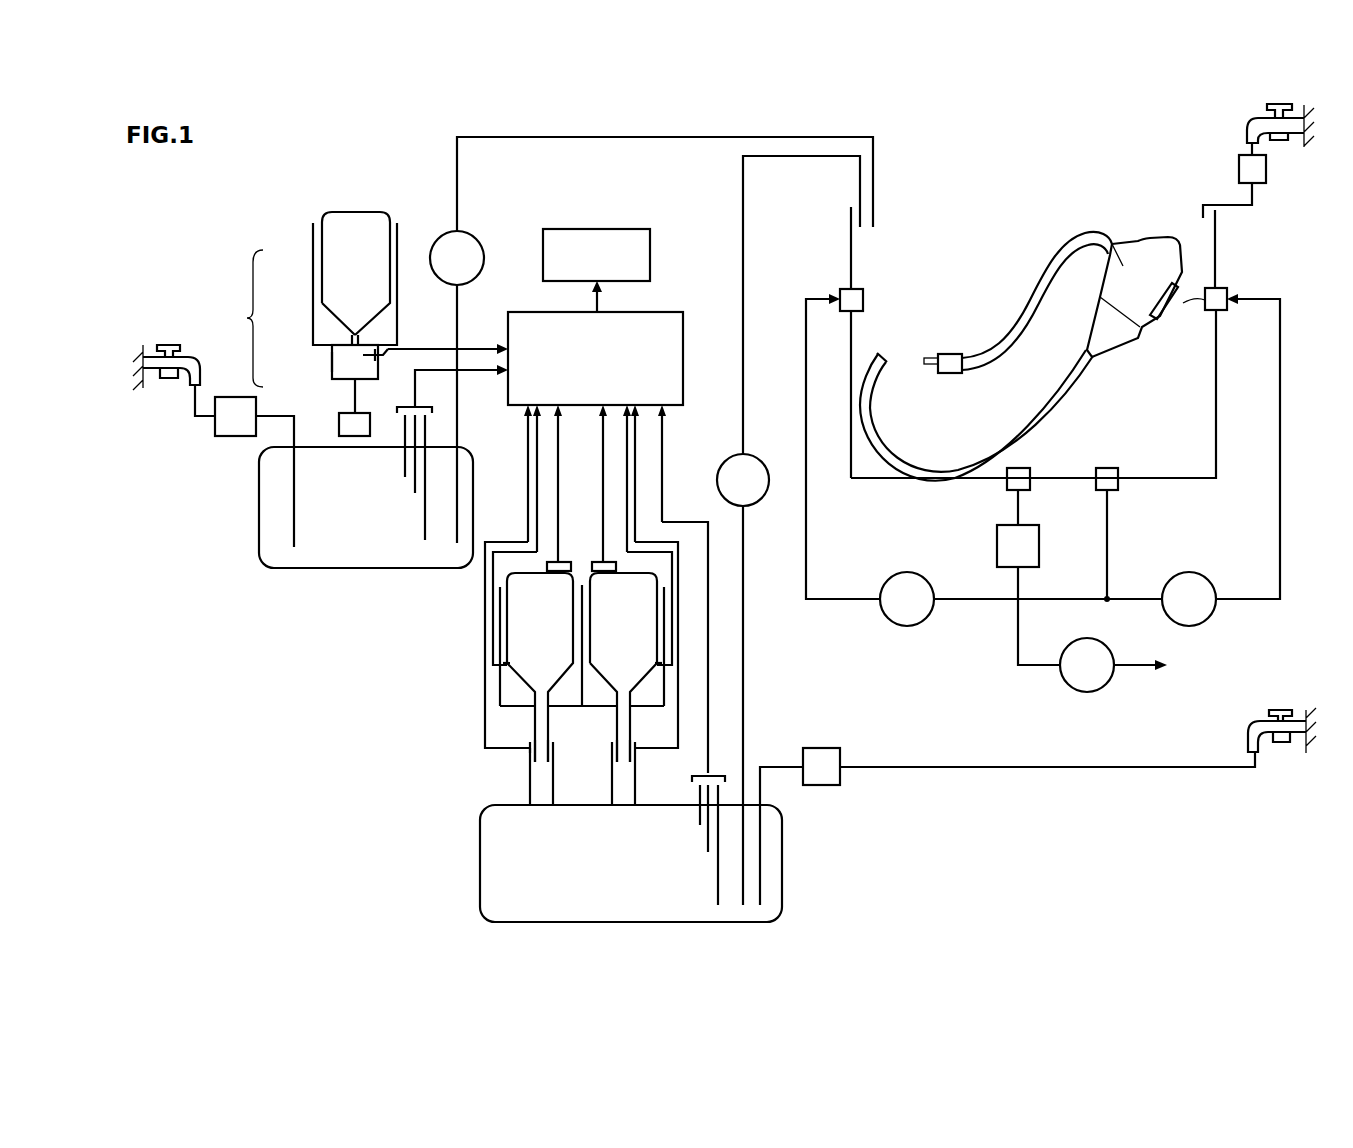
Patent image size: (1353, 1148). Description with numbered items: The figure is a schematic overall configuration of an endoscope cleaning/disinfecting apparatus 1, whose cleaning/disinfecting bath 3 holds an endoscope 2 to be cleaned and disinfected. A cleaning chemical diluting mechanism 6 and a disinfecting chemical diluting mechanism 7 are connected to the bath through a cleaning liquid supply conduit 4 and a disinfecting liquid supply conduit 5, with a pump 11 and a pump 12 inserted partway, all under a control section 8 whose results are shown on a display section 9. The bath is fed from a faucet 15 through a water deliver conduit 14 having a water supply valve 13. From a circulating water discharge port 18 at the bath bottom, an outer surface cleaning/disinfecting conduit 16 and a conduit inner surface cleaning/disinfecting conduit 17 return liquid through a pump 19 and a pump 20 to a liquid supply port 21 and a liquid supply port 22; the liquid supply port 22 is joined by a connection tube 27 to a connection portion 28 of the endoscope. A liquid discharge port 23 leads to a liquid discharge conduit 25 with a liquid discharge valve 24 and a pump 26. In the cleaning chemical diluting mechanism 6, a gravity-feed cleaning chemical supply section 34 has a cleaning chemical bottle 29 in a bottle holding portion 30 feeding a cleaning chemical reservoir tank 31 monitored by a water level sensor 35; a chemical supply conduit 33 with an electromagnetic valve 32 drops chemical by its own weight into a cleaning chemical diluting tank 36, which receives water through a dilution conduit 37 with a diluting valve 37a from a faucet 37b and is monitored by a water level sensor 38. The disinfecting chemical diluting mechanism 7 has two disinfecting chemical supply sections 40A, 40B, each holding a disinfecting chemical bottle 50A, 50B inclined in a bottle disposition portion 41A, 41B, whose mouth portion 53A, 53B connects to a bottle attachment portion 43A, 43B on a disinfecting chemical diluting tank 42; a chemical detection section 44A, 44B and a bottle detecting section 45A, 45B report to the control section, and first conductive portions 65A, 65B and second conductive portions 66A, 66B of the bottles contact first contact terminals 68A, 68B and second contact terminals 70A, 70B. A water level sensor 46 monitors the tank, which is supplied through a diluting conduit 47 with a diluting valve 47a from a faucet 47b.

The endoscope cleaning/disinfecting apparatus 1 is at (316, 158).
The endoscope 2 is at (1080, 223).
The cleaning/disinfecting bath 3 is at (1178, 480).
The cleaning liquid supply conduit 4 is at (690, 137).
The disinfecting liquid supply conduit 5 is at (743, 192).
The cleaning chemical diluting mechanism 6 is at (296, 220).
The disinfecting chemical diluting mechanism 7 is at (421, 706).
The control section 8 is at (675, 312).
The display section 9 is at (597, 229).
The pump 11 is at (478, 240).
The pump 12 is at (763, 462).
The water supply valve 13 is at (1266, 170).
The water deliver conduit 14 is at (1245, 210).
The faucet 15 is at (1247, 128).
The outer surface cleaning/disinfecting conduit 16 is at (808, 517).
The conduit inner surface cleaning/disinfecting conduit 17 is at (1278, 517).
The circulating water discharge port 18 is at (1118, 490).
The pump 19 is at (907, 626).
The pump 20 is at (1205, 622).
The liquid supply port 21 is at (846, 289).
The liquid supply port 22 is at (1218, 312).
The liquid discharge port 23 is at (1030, 482).
The liquid discharge valve 24 is at (1039, 548).
The liquid discharge conduit 25 is at (1018, 652).
The pump 26 is at (1087, 692).
The connection tube 27 is at (1174, 310).
The connection portion 28 is at (1183, 285).
The cleaning chemical bottle 29 is at (327, 264).
The bottle holding portion 30 is at (313, 290).
The cleaning chemical reservoir tank 31 is at (332, 360).
The electromagnetic valve 32 is at (339, 420).
The chemical supply conduit 33 is at (348, 398).
The gravity-feed cleaning chemical supply section 34 is at (240, 318).
The water level sensor 35 is at (368, 352).
The cleaning chemical diluting tank 36 is at (259, 540).
The dilution conduit 37 is at (195, 410).
The diluting valve 37a is at (228, 437).
The faucet 37b is at (170, 345).
The water level sensor 38 is at (436, 426).
The disinfecting chemical supply section 40A is at (370, 633).
The disinfecting chemical supply section 40B is at (713, 559).
The bottle disposition portion 41A is at (498, 683).
The bottle disposition portion 41B is at (668, 683).
The disinfecting chemical diluting tank 42 is at (480, 865).
The bottle attachment portion 43A is at (522, 790).
The bottle attachment portion 43B is at (640, 790).
The chemical detection section 44A is at (485, 628).
The chemical detection section 44B is at (680, 628).
The bottle detecting section 45A is at (553, 562).
The bottle detecting section 45B is at (610, 562).
The water level sensor 46 is at (712, 773).
The diluting conduit 47 is at (940, 767).
The diluting valve 47a is at (822, 785).
The faucet 47b is at (1280, 710).
The disinfecting chemical bottle 50A is at (518, 596).
The disinfecting chemical bottle 50B is at (650, 596).
The mouth portion 53A is at (510, 723).
The mouth portion 53B is at (682, 725).
The first conductive portion 65A is at (510, 663).
The first conductive portion 65B is at (653, 663).
The second conductive portion 66A is at (547, 740).
The second conductive portion 66B is at (612, 743).
The first contact terminal 68A is at (505, 663).
The first contact terminal 68B is at (665, 663).
The second contact terminal 70A is at (528, 752).
The second contact terminal 70B is at (638, 750).